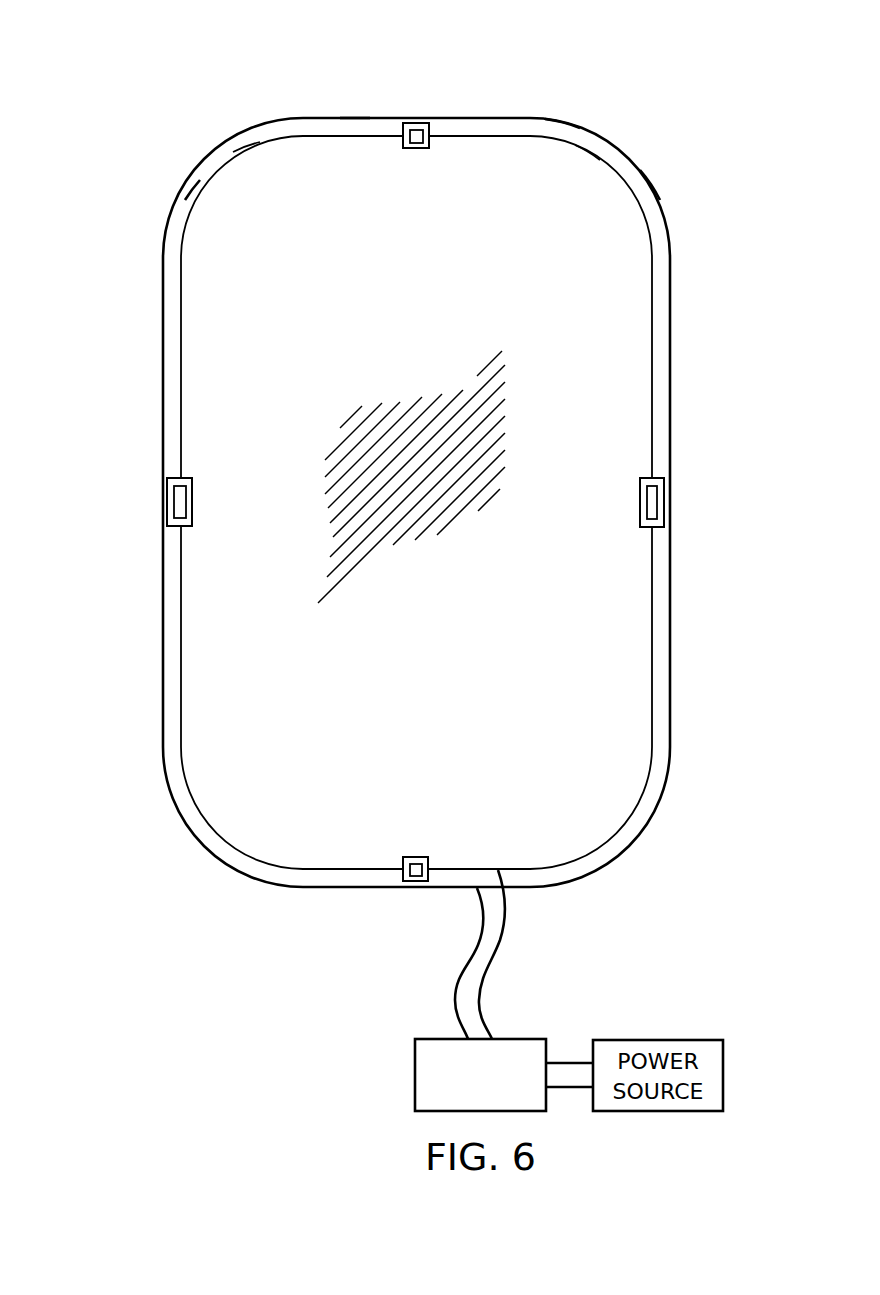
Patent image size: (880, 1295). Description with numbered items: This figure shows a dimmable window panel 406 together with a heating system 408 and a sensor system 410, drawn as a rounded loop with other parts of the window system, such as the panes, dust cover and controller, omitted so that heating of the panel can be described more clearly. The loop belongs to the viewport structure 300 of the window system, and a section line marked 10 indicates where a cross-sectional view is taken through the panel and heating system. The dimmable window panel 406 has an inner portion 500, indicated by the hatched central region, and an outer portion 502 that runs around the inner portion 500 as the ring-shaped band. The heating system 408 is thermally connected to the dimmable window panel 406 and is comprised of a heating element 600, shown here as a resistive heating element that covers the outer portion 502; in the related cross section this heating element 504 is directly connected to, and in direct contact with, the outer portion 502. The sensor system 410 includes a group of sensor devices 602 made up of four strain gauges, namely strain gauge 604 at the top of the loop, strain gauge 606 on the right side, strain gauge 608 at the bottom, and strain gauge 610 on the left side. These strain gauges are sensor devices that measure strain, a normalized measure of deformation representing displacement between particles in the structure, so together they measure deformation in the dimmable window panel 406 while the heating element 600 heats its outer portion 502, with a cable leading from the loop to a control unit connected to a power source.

The section line 10- 10 is at (297, 93).
The viewport structure 300 is at (186, 329).
The dimmable window panel 406 is at (244, 166).
The heating system 408 is at (350, 110).
The sensor system 410 is at (553, 58).
The inner portion 500 is at (588, 165).
The outer portion 502 is at (565, 122).
The heating element 504 is at (191, 193).
The heating element 600 is at (675, 172).
The group of sensor devices 602 is at (420, 165).
The strain gauge 604 is at (405, 124).
The strain gauge 606 is at (659, 503).
The strain gauge 608 is at (418, 881).
The strain gauge 610 is at (173, 503).